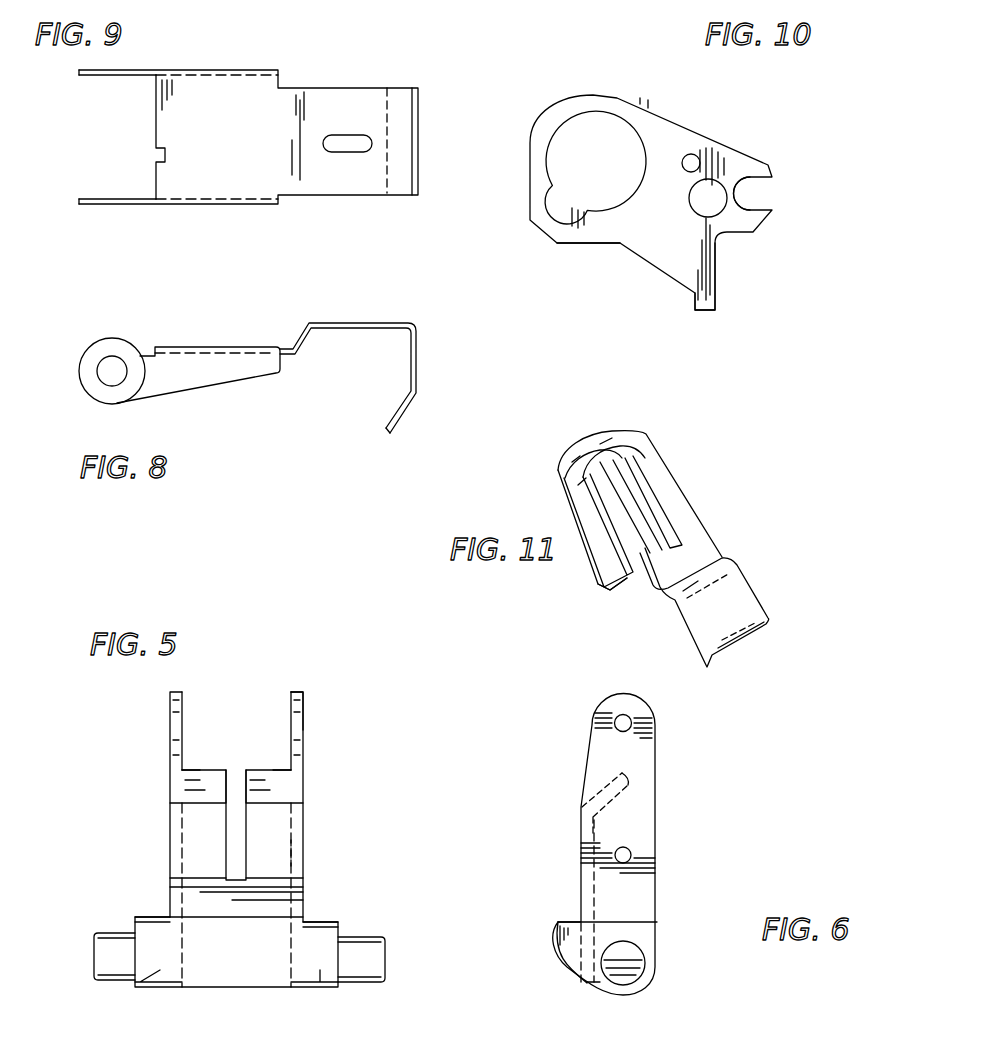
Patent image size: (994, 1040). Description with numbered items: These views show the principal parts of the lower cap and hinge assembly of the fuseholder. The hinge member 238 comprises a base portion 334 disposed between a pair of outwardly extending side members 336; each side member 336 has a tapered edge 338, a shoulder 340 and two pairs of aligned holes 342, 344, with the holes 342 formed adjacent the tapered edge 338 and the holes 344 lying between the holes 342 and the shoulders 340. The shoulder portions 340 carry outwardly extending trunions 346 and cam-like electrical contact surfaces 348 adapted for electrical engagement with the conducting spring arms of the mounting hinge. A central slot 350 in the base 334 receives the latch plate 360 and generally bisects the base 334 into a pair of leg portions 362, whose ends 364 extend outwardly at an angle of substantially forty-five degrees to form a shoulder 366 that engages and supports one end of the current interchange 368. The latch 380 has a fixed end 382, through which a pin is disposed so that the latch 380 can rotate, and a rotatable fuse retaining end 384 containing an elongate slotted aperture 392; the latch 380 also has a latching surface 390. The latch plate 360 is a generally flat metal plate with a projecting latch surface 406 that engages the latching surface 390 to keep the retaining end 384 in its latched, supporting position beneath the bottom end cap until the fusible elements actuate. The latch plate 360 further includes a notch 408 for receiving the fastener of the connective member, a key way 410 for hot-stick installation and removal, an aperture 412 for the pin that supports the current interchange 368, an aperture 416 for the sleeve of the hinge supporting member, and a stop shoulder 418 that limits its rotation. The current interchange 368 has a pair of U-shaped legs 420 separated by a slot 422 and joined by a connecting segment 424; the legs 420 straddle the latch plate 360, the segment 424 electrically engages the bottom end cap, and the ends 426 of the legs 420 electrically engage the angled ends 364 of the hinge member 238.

In FIG. 5, the hinge member 238 is at (246, 972).
In FIG. 6, the hinge member 238 is at (640, 803).
In FIG. 5, the base portion 334 is at (270, 923).
In FIG. 6, the base portion 334 is at (593, 870).
In FIG. 5, the side members 336 is at (170, 778).
In FIG. 6, the side members 336 is at (645, 752).
In FIG. 6, the tapered edge 338 is at (590, 720).
In FIG. 5, the shoulder 340 is at (140, 985).
In FIG. 6, the shoulder 340 is at (647, 930).
In FIG. 5, the holes 342 is at (305, 713).
In FIG. 6, the holes 342 is at (632, 712).
In FIG. 5, the holes 344 is at (300, 853).
In FIG. 6, the holes 344 is at (627, 853).
In FIG. 5, the trunions 346 is at (105, 957).
In FIG. 6, the trunions 346 is at (632, 962).
In FIG. 6, the cam-like electrical contact surfaces 348 is at (565, 970).
In FIG. 5, the central slot 350 is at (235, 780).
In FIG. 10, the latch plate 360 is at (660, 252).
In FIG. 5, the leg portions 362 is at (192, 822).
In FIG. 5, the ends 364 is at (195, 765).
In FIG. 6, the ends 364 is at (603, 787).
In FIG. 6, the shoulder 366 is at (628, 768).
In FIG. 11, the current interchange 368 is at (695, 471).
In FIG. 9, the latch 380 is at (267, 55).
In FIG. 8, the latch 380 is at (255, 333).
In FIG. 8, the fixed end 382 is at (120, 342).
In FIG. 9, the fuse retaining end 384 is at (376, 88).
In FIG. 8, the fuse retaining end 384 is at (413, 323).
In FIG. 9, the latching surface 390 is at (156, 110).
In FIG. 9, the slotted aperture 392 is at (347, 148).
In FIG. 10, the projecting latch surface 406 is at (716, 303).
In FIG. 10, the notch 408 is at (765, 206).
In FIG. 10, the key way 410 is at (551, 196).
In FIG. 10, the aperture 412 is at (693, 152).
In FIG. 10, the aperture 416 is at (718, 193).
In FIG. 10, the stop shoulder 418 is at (578, 250).
In FIG. 11, the U-shaped legs 420 is at (650, 452).
In FIG. 11, the slot 422 is at (675, 525).
In FIG. 11, the connecting segment 424 is at (750, 602).
In FIG. 11, the ends 426 is at (607, 592).